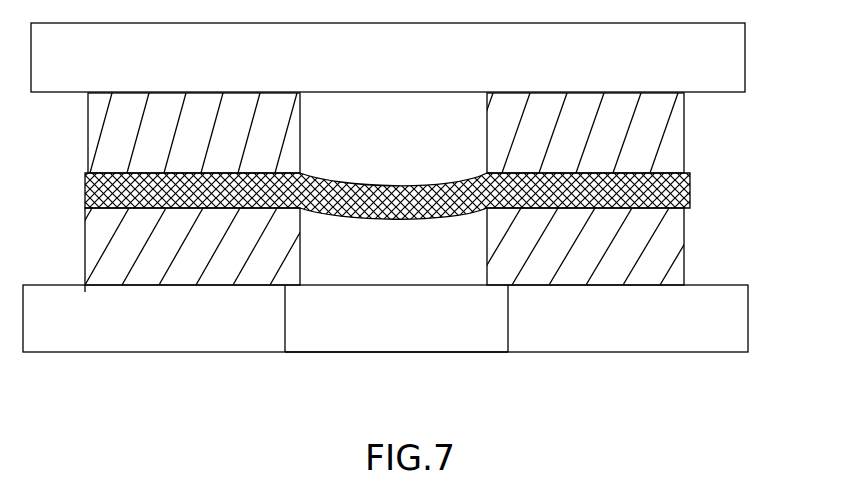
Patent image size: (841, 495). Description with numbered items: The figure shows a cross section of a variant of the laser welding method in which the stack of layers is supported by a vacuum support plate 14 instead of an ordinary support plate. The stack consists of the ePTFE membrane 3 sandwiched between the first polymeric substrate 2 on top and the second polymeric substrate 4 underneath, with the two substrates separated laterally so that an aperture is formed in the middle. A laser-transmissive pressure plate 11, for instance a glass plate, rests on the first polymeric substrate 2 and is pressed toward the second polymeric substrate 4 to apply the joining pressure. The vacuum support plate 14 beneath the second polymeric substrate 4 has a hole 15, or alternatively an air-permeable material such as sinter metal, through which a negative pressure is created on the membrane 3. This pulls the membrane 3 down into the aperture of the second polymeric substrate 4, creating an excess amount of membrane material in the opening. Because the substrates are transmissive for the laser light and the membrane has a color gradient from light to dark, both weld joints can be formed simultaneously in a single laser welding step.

The pressure plate 11 is at (737, 48).
The first polymeric substrate 2 is at (673, 127).
The membrane 3 is at (684, 183).
The second polymeric substrate 4 is at (684, 236).
The vacuum support plate 14 is at (740, 318).
The hole 15 is at (465, 338).